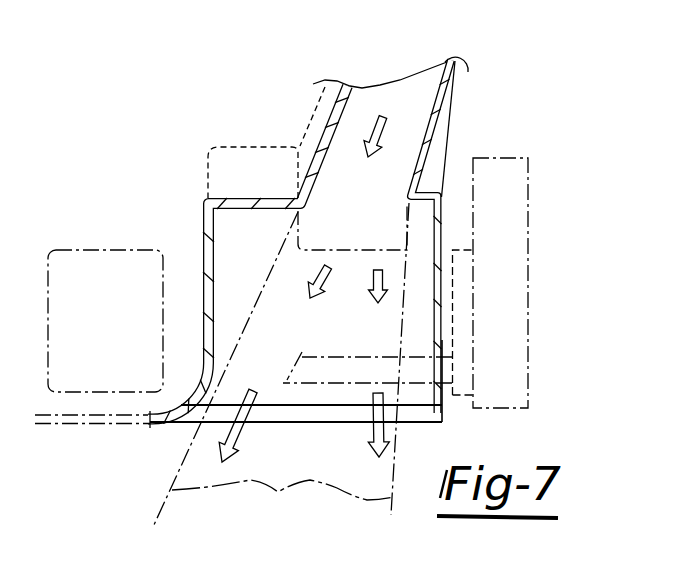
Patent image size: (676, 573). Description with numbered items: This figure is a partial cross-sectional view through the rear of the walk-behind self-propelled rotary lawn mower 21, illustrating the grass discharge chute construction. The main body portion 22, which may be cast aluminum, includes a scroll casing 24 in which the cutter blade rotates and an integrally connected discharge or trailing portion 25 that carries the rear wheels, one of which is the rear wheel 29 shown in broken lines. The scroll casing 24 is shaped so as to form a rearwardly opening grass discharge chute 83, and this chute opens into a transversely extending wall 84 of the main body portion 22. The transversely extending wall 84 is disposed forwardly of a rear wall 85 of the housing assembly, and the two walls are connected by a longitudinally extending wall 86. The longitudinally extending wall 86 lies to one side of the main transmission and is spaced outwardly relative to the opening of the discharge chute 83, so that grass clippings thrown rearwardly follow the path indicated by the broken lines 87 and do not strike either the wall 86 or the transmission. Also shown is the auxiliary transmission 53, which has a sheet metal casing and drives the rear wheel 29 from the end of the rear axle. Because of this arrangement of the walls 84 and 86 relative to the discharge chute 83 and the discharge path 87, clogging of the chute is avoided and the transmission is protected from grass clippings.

The lawn mower 21 is at (494, 93).
The main body portion 22 is at (430, 170).
The scroll casing 24 is at (468, 72).
The discharge or trailing portion 25 is at (447, 411).
The rear wheel 29 is at (528, 309).
The auxiliary transmission 53 is at (453, 250).
The grass discharge chute 83 is at (302, 203).
The transversely extending wall 84 is at (241, 207).
The rear wall 85 is at (113, 425).
The longitudinally extending wall 86 is at (208, 287).
The path of grass clippings 87 is at (282, 503).